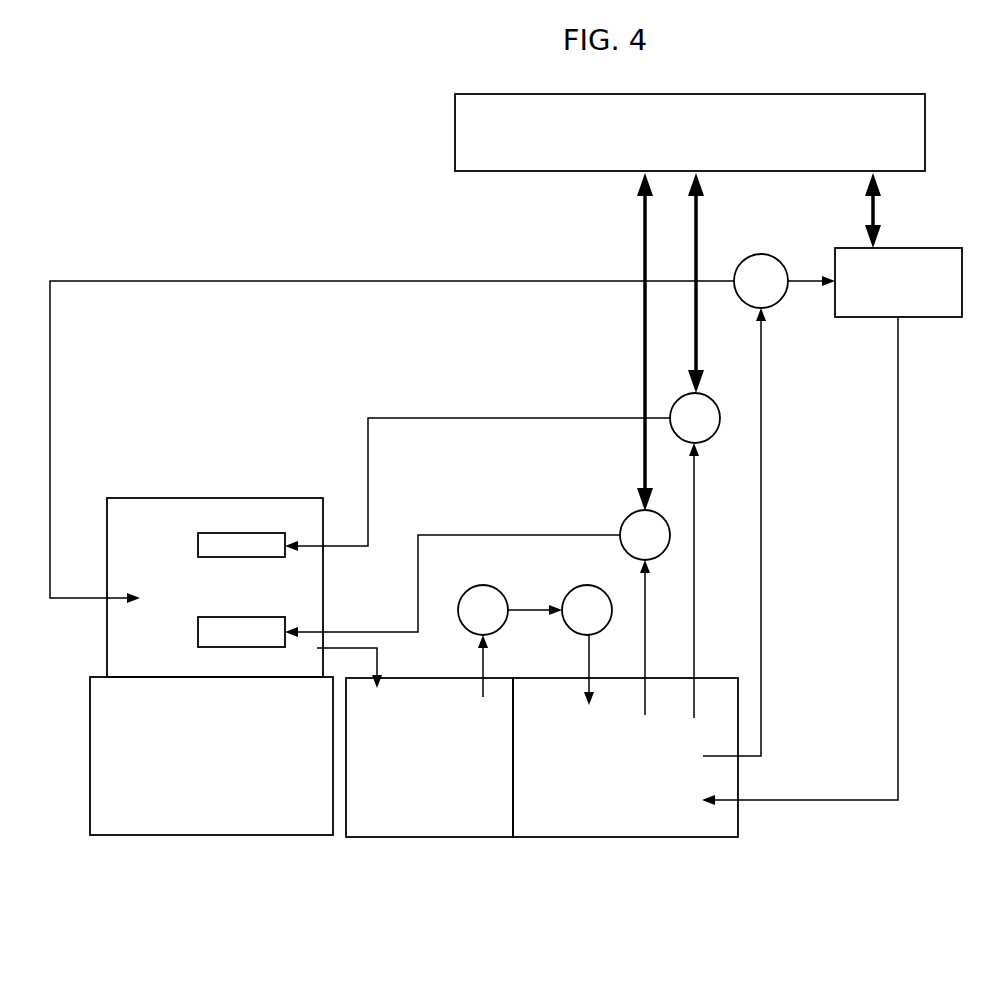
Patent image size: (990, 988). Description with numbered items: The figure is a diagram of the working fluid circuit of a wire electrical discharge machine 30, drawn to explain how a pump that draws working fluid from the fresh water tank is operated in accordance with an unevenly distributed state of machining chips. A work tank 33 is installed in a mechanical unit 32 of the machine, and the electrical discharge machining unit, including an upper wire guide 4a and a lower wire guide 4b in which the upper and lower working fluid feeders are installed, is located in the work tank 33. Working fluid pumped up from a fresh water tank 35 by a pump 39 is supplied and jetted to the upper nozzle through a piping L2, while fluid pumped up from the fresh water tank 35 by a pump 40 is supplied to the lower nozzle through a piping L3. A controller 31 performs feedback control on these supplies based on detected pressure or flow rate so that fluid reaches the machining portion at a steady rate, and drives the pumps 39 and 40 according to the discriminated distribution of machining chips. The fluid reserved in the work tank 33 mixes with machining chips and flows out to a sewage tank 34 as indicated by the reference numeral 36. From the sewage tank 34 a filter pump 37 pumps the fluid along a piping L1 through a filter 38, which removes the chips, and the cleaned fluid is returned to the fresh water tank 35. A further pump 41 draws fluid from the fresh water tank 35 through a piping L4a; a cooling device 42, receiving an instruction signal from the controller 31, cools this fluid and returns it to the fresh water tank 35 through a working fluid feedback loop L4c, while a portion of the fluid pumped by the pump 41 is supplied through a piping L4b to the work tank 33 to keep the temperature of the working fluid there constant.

The wire electrical discharge machine 30 is at (258, 207).
The controller 31 is at (455, 130).
The mechanical unit 32 is at (208, 838).
The work tank 33 is at (168, 497).
The upper wire guide 4a is at (245, 537).
The lower wire guide 4b is at (245, 619).
The sewage tank 34 is at (447, 838).
The fresh water tank 35 is at (642, 838).
The working fluid outflow 36 is at (377, 663).
The filter pump 37 is at (481, 585).
The filter 38 is at (590, 585).
The pump 39 is at (713, 400).
The pump 40 is at (660, 514).
The pump 41 is at (742, 262).
The cooling device 42 is at (925, 248).
The piping L1 is at (527, 609).
The piping L2 is at (494, 418).
The piping L3 is at (494, 534).
The piping L4a is at (761, 537).
The piping L4b is at (492, 280).
The working fluid feedback loop L4c is at (752, 803).